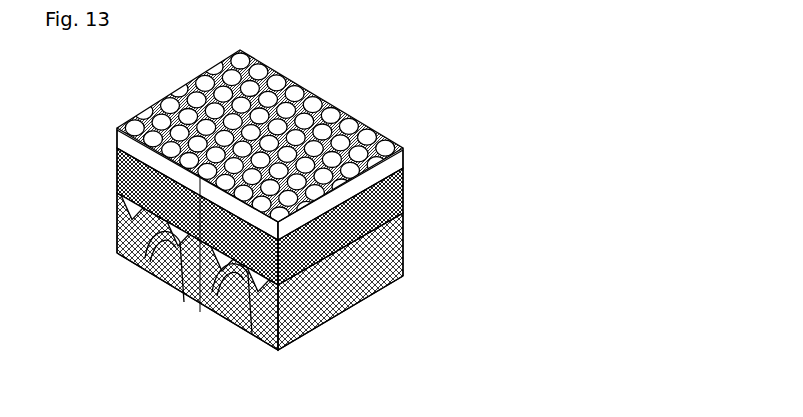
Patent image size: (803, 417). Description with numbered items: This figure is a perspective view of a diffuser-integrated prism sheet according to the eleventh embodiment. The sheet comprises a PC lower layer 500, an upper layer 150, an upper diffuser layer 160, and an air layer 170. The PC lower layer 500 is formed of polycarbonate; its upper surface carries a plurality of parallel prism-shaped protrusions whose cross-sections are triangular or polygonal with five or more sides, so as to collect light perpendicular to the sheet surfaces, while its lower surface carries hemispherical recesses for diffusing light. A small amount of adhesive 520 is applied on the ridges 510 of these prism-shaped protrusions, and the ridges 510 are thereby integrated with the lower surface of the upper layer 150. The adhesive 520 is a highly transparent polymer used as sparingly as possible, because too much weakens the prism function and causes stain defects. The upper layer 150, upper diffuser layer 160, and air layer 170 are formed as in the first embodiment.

The upper layer 150 is at (118, 172).
The upper diffuser layer 160 is at (118, 139).
The air layer 170 is at (293, 337).
The PC lower layer 500 is at (116, 218).
The ridges 510 is at (228, 286).
The adhesive 520 is at (166, 280).